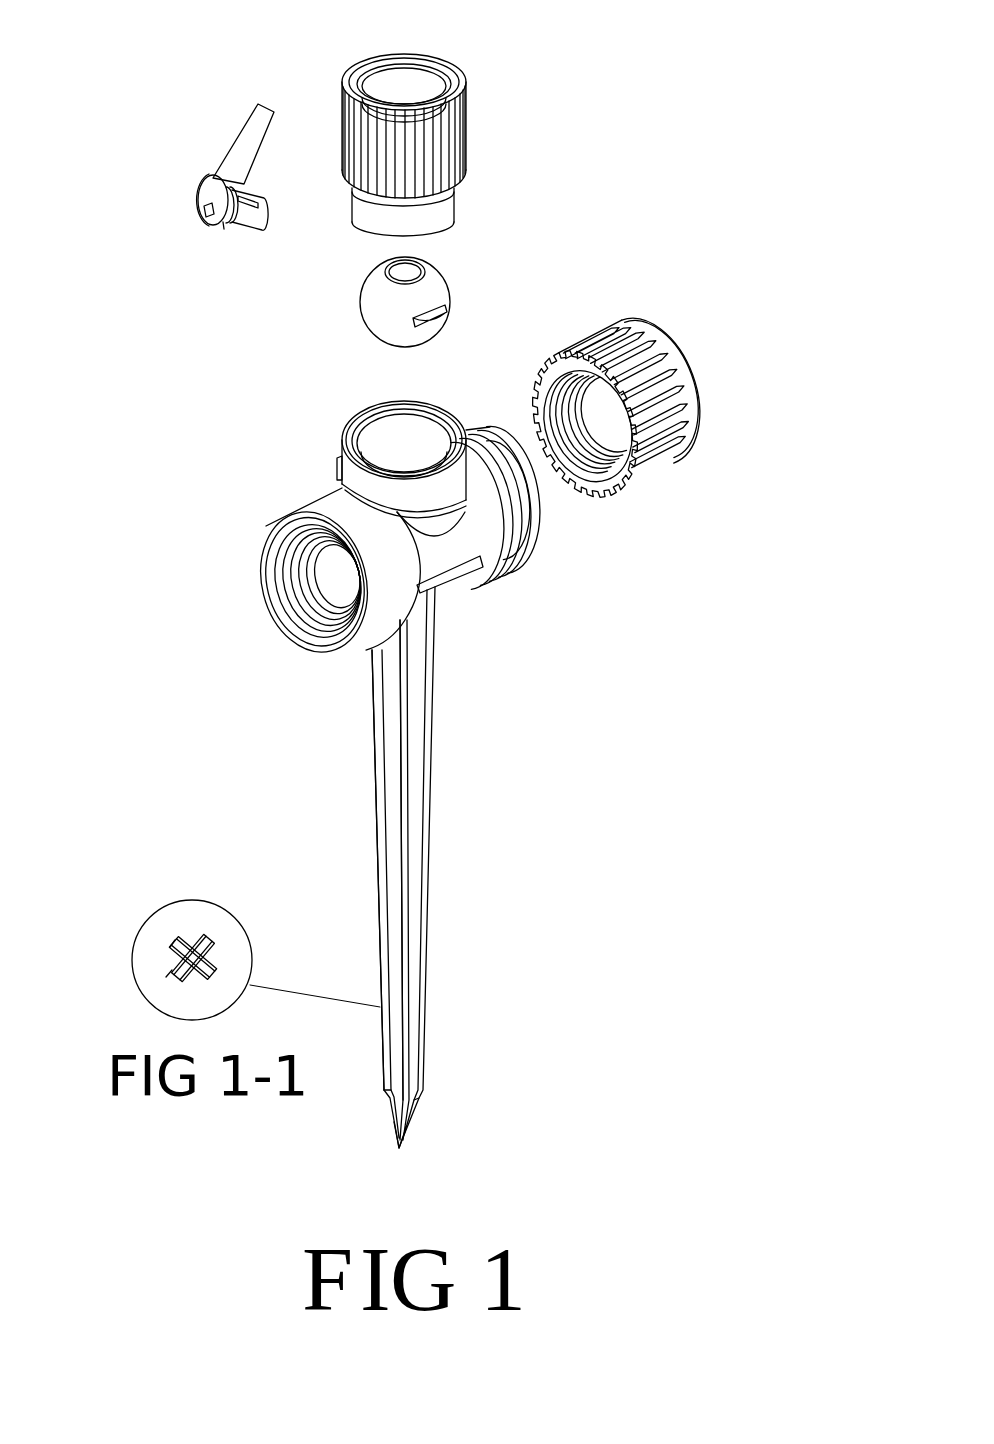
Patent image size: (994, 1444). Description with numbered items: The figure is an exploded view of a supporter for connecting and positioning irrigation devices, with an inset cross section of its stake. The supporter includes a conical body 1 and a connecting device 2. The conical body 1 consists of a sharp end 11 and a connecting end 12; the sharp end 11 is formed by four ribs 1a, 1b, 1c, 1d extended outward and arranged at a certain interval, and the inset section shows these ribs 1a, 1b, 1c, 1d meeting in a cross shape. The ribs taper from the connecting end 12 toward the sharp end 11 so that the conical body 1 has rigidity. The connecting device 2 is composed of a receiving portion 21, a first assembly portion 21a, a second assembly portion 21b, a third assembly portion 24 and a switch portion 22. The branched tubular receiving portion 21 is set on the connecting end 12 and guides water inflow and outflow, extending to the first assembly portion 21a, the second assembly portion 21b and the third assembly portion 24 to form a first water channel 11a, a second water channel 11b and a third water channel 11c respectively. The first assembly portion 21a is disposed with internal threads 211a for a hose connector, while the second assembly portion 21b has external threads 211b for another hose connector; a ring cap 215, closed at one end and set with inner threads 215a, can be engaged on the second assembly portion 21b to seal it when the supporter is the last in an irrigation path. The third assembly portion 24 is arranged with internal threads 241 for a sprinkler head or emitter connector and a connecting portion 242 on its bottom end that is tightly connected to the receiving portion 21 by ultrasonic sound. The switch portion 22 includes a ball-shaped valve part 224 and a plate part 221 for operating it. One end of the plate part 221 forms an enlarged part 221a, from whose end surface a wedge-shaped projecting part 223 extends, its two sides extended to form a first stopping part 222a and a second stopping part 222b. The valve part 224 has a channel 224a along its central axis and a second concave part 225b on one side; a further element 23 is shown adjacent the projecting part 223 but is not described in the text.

In FIG. 1, the conical body 1 is at (474, 867).
In FIG. 1, the rib 1a is at (430, 848).
In FIG. 1-1, the rib 1a is at (217, 977).
In FIG. 1, the rib 1b is at (372, 906).
In FIG. 1-1, the rib 1b is at (172, 970).
In FIG. 1-1, the rib 1c is at (170, 947).
In FIG. 1-1, the rib 1d is at (217, 933).
In FIG. 1, the sharp end 11 is at (415, 1118).
In FIG. 1, the first water channel 11a is at (400, 455).
In FIG. 1, the second water channel 11b is at (280, 613).
In FIG. 1, the third water channel 11c is at (512, 412).
In FIG. 1, the connecting end 12 is at (478, 592).
In FIG. 1, the connecting device 2 is at (777, 597).
In FIG. 1, the receiving portion 21 is at (441, 563).
In FIG. 1, the first assembly portion 21a is at (340, 667).
In FIG. 1, the second assembly portion 21b is at (537, 505).
In FIG. 1, the internal threads 211a is at (280, 596).
In FIG. 1, the external threads 211b is at (520, 530).
In FIG. 1, the ring cap 215 is at (644, 370).
In FIG. 1, the inner threads 215a is at (608, 458).
In FIG. 1, the switch portion 22 is at (188, 210).
In FIG. 1, the plate part 221 is at (243, 138).
In FIG. 1, the enlarged part 221a is at (203, 225).
In FIG. 1, the first stopping part 222a is at (207, 210).
In FIG. 1, the second stopping part 222b is at (240, 195).
In FIG. 1, the projecting part 223 is at (247, 222).
In FIG. 1, the stem seal 23 is at (223, 227).
In FIG. 1, the valve part 224 is at (482, 293).
In FIG. 1, the channel 224a is at (405, 274).
In FIG. 1, the second concave part 225b is at (447, 320).
In FIG. 1, the third assembly portion 24 is at (494, 125).
In FIG. 1, the internal threads 241 is at (408, 95).
In FIG. 1, the connecting portion 242 is at (452, 210).